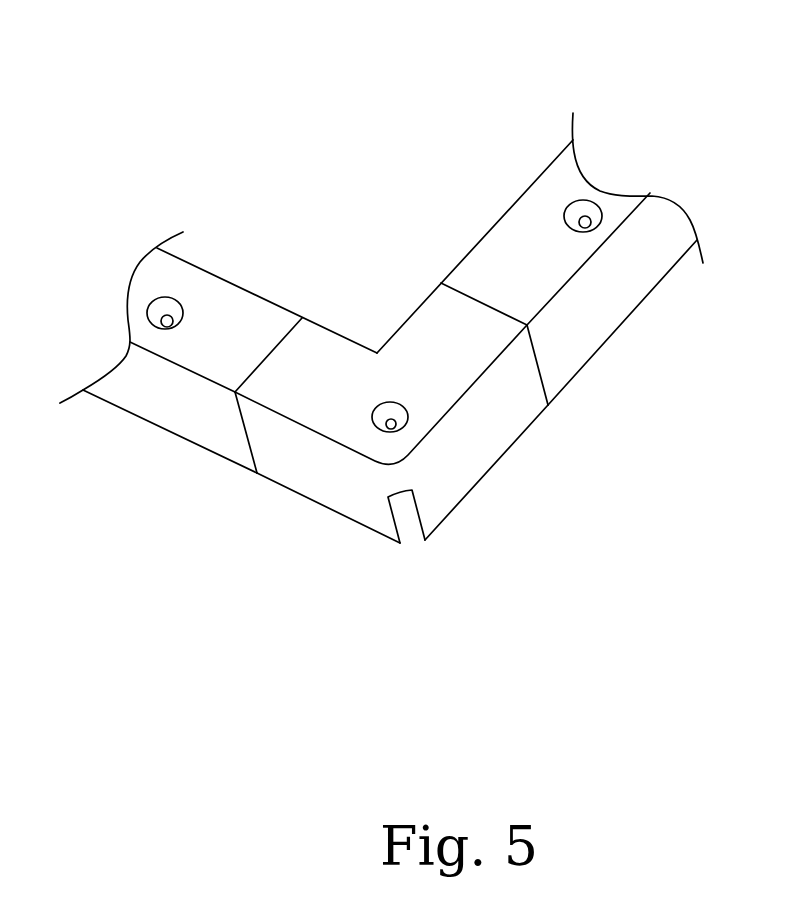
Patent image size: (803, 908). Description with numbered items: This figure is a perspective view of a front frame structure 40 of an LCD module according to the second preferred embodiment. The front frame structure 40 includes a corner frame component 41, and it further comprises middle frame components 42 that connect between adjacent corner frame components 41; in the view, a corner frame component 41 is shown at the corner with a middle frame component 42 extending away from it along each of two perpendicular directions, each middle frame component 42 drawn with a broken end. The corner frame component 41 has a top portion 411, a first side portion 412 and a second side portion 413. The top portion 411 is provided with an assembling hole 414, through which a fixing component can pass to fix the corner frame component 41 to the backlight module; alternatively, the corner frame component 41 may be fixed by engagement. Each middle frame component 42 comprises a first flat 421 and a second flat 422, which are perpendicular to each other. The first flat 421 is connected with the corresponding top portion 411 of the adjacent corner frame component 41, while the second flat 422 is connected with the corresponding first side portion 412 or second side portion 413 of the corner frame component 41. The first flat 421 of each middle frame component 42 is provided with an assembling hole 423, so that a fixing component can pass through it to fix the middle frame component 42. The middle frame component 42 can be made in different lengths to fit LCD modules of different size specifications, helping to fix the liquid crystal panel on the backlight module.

The front frame structure 40 is at (733, 44).
The corner frame component 41 is at (487, 517).
The top portion 411 is at (417, 337).
The first side portion 412 is at (290, 460).
The second side portion 413 is at (507, 425).
The assembling hole 414 is at (385, 428).
The middle frame component 42 is at (160, 455).
The first flat 421 is at (233, 300).
The second flat 422 is at (143, 395).
The assembling hole 423 is at (161, 318).